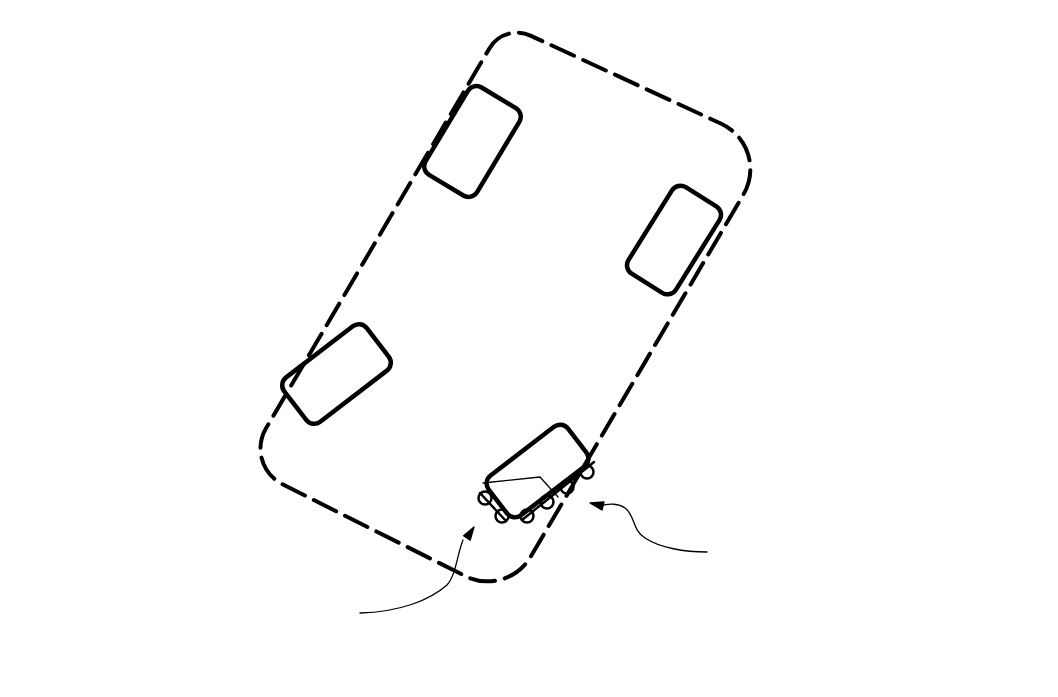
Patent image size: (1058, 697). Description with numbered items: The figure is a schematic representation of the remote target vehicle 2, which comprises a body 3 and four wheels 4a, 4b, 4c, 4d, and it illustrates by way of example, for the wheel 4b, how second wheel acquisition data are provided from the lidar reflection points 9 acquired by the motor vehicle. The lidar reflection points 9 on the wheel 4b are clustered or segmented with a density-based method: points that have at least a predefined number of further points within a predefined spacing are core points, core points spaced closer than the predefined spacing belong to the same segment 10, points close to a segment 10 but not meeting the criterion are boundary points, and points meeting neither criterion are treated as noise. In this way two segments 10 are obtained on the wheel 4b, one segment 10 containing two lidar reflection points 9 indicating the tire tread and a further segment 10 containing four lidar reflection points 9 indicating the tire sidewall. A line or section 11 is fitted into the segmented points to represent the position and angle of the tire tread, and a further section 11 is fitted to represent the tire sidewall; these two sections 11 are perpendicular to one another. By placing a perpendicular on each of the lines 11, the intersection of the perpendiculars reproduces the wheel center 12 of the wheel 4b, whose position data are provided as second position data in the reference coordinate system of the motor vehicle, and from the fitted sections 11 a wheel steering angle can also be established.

The target vehicle 2 is at (288, 137).
The body 3 is at (733, 128).
The wheel 4a is at (372, 332).
The wheel 4b is at (557, 426).
The wheel 4c is at (472, 88).
The wheel 4d is at (662, 203).
The lidar reflection points 9 is at (593, 471).
The segment 10 is at (539, 566).
The section 11 is at (495, 513).
The wheel center 12 is at (540, 478).